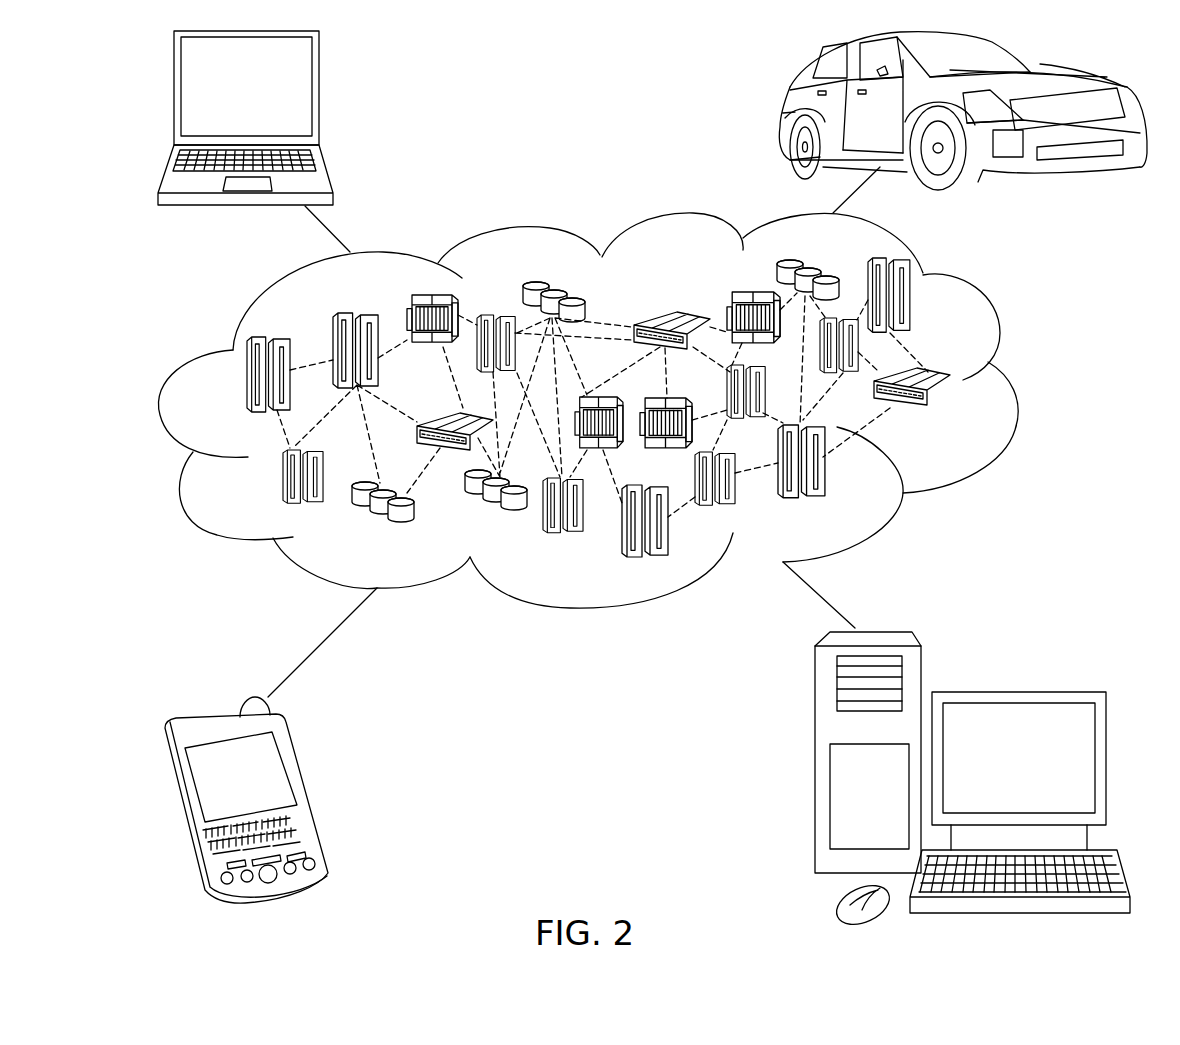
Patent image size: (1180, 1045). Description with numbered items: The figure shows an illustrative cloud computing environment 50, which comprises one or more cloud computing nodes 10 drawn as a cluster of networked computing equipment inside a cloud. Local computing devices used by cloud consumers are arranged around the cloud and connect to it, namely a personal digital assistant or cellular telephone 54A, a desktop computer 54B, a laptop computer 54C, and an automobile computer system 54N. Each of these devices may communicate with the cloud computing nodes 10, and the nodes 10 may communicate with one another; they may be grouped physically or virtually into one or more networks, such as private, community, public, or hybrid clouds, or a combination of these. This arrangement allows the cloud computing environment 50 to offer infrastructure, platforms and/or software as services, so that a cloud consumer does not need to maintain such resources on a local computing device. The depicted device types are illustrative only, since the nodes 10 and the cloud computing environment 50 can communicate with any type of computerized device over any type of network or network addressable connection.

The laptop computer 54C is at (320, 96).
The automobile computer system 54N is at (785, 112).
The personal digital assistant or cellular telephone 54A is at (310, 793).
The desktop computer 54B is at (1016, 690).
The cloud computing environment 50 is at (1015, 385).
The cloud computing nodes 10 is at (955, 418).